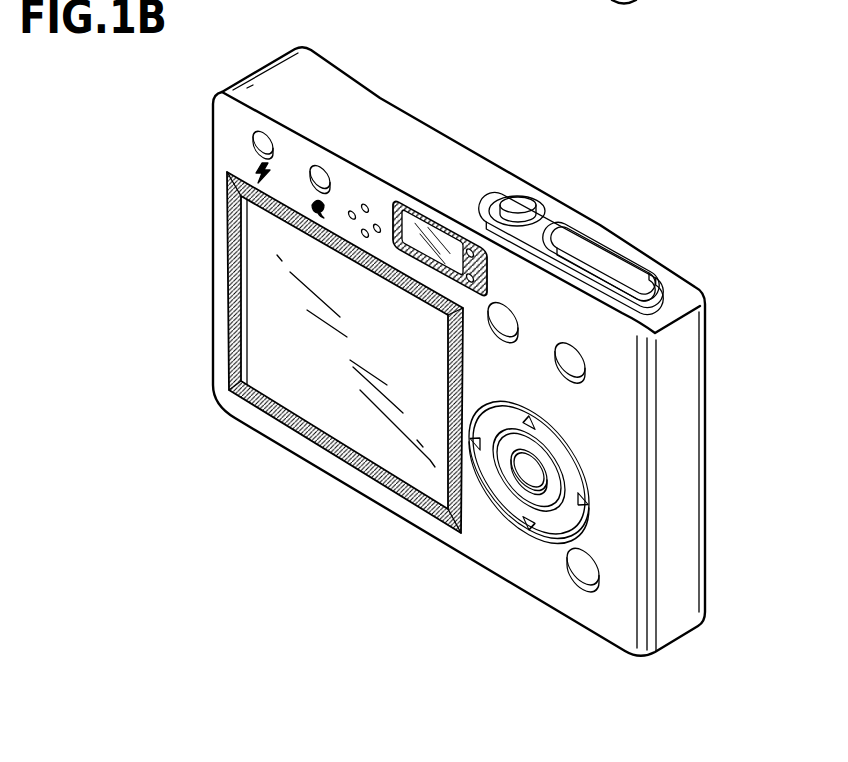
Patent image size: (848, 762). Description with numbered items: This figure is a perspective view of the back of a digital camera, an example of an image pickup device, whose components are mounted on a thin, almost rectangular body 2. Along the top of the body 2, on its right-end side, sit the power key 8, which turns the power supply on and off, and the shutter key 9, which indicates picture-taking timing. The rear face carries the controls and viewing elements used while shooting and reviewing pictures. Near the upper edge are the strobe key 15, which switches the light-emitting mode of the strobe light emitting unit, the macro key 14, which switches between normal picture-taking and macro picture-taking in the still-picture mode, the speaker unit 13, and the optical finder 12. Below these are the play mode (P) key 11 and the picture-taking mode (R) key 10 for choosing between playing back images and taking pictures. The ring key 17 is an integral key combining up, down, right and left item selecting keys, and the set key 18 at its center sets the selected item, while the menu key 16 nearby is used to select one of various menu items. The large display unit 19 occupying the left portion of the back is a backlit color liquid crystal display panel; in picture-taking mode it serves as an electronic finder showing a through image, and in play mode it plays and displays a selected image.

The body 2 is at (707, 362).
The power key 8 is at (518, 201).
The shutter key 9 is at (600, 253).
The picture-taking mode (R) key 10 is at (503, 330).
The play mode (P) key 11 is at (572, 368).
The optical finder 12 is at (443, 247).
The speaker unit 13 is at (370, 217).
The macro key 14 is at (323, 170).
The strobe key 15 is at (264, 133).
The menu key 16 is at (575, 572).
The ring key 17 is at (498, 498).
The set key 18 is at (523, 486).
The display unit 19 is at (315, 383).